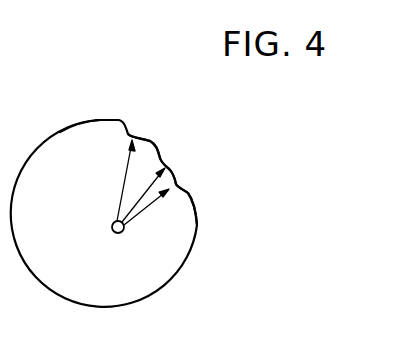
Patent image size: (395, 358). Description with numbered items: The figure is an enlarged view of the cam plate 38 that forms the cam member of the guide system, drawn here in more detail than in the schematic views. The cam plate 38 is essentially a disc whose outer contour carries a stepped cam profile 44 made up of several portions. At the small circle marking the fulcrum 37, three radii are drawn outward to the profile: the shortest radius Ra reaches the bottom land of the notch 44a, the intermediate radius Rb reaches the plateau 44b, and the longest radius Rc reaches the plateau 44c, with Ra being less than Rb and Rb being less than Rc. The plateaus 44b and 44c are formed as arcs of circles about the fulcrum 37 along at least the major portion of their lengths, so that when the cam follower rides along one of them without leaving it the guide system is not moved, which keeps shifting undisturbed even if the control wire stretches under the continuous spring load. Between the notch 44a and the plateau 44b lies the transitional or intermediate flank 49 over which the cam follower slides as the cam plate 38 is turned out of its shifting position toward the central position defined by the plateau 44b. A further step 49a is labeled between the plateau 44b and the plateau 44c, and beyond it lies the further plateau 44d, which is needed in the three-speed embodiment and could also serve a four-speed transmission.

The fulcrum 37 is at (116, 233).
The cam plate 38 is at (139, 299).
The cam 44 is at (80, 123).
The notch 44a is at (181, 186).
The plateau 44b is at (170, 169).
The plateau 44c is at (145, 138).
The further plateau 44d is at (103, 120).
The transitional or intermediate flank 49 is at (176, 183).
The cam step surface 49a is at (161, 160).
The radius of the notch bottom land Ra is at (146, 207).
The radius of plateau 44b Rb is at (143, 195).
The radius of plateau 44c Rc is at (123, 180).